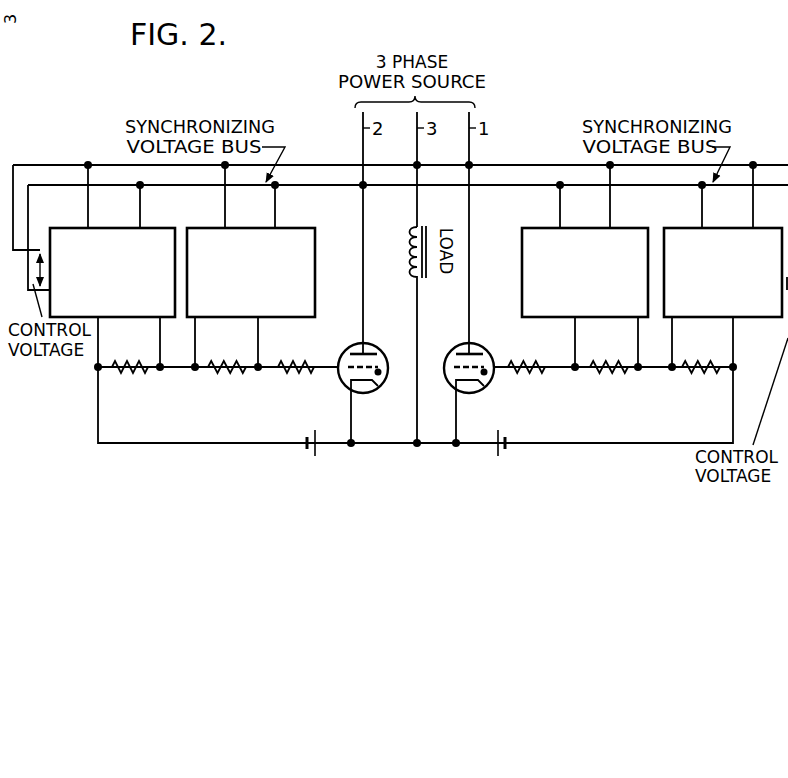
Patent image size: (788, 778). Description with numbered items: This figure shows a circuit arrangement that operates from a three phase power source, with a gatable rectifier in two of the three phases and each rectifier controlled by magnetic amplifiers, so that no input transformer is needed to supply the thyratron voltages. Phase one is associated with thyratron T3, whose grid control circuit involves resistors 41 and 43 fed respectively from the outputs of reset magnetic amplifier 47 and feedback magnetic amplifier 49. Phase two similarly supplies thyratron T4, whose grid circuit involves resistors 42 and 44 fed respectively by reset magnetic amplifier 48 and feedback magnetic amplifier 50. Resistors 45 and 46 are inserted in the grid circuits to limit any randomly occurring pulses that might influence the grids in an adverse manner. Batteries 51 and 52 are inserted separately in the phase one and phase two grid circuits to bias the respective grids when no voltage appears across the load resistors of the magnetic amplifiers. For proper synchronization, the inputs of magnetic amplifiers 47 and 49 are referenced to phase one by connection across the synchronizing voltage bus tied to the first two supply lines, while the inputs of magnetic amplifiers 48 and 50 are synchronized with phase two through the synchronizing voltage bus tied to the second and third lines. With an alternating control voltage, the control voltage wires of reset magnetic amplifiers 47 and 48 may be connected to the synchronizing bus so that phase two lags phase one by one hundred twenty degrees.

The resistor 41 is at (701, 356).
The resistor 42 is at (130, 356).
The resistor 43 is at (609, 356).
The resistor 44 is at (227, 356).
The resistor 45 is at (526, 356).
The resistor 46 is at (296, 356).
The reset magnetic amplifier 47 is at (721, 228).
The reset magnetic amplifier 48 is at (109, 228).
The feedback magnetic amplifier 49 is at (579, 228).
The feedback magnetic amplifier 50 is at (244, 228).
The battery 51 is at (501, 454).
The battery 52 is at (313, 454).
The thyratron T3 is at (483, 346).
The thyratron T4 is at (377, 346).